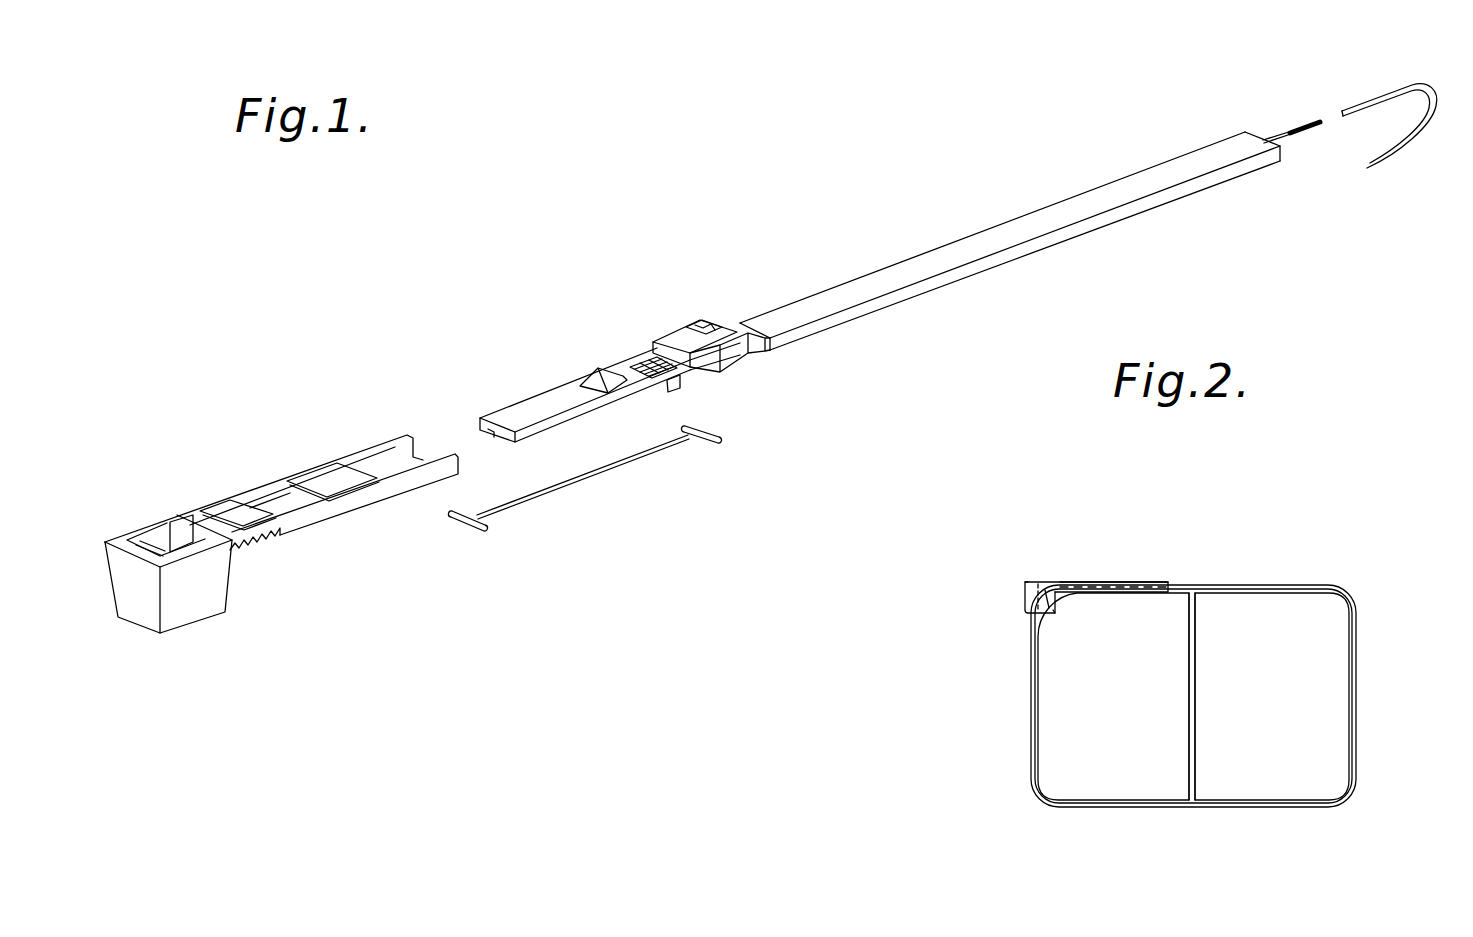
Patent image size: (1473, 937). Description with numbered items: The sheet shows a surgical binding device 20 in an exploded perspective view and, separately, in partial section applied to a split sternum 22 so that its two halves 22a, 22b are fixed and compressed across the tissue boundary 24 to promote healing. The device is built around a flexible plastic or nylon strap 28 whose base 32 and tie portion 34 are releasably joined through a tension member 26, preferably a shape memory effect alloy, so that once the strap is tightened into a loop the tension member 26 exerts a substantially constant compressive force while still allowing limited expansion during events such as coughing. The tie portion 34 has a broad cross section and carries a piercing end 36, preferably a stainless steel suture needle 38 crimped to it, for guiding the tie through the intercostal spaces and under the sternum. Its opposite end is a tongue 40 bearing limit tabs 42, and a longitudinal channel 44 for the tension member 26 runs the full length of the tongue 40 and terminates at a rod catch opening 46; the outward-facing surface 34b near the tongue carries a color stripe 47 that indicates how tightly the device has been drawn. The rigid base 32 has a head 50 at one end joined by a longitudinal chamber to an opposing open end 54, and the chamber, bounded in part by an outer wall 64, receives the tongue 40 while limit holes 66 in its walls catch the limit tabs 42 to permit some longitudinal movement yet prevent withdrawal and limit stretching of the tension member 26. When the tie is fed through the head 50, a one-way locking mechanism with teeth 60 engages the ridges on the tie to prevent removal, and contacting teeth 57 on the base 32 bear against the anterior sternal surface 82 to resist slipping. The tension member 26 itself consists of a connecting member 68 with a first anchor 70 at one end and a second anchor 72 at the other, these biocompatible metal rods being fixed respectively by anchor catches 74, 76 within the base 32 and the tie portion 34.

In FIG. 2, the binding device 20 is at (1146, 694).
In FIG. 2, the split sternum 22 is at (1164, 704).
In FIG. 2, the sternum half 22a is at (1093, 745).
In FIG. 2, the sternum half 22b is at (1272, 747).
In FIG. 2, the tissue boundary 24 is at (1193, 590).
In FIG. 1, the tension member 26 is at (612, 509).
In FIG. 1, the strap 28 is at (903, 267).
In FIG. 2, the strap 28 is at (1336, 676).
In FIG. 1, the base 32 is at (277, 544).
In FIG. 2, the base 32 is at (1033, 562).
In FIG. 1, the tie portion 34 is at (1010, 237).
In FIG. 2, the tie portion 34 is at (1357, 750).
In FIG. 1, the surface facing away from loop interior 34b is at (1080, 205).
In FIG. 1, the piercing end 36 is at (1285, 132).
In FIG. 1, the needle 38 is at (1377, 95).
In FIG. 1, the tongue 40 is at (543, 402).
In FIG. 1, the limit tabs 42 is at (580, 368).
In FIG. 1, the longitudinal channel 44 is at (490, 432).
In FIG. 1, the rod catch opening 46 is at (710, 322).
In FIG. 1, the color stripe 47 is at (640, 360).
In FIG. 1, the head 50 is at (187, 597).
In FIG. 2, the head 50 is at (1023, 583).
In FIG. 1, the open end 54 is at (392, 492).
In FIG. 1, the contacting teeth 57 is at (267, 545).
In FIG. 2, the contacting teeth 57 is at (1055, 613).
In FIG. 2, the teeth 60 is at (1023, 598).
In FIG. 1, the outer wall 64 is at (270, 497).
In FIG. 1, the limit holes 66 is at (328, 488).
In FIG. 1, the connecting member 68 is at (620, 467).
In FIG. 1, the first anchor 70 is at (460, 527).
In FIG. 1, the second anchor 72 is at (703, 447).
In FIG. 1, the anchor catch 74 is at (213, 503).
In FIG. 1, the anchor catch 76 is at (692, 322).
In FIG. 2, the anterior sternal surface 82 is at (1178, 592).